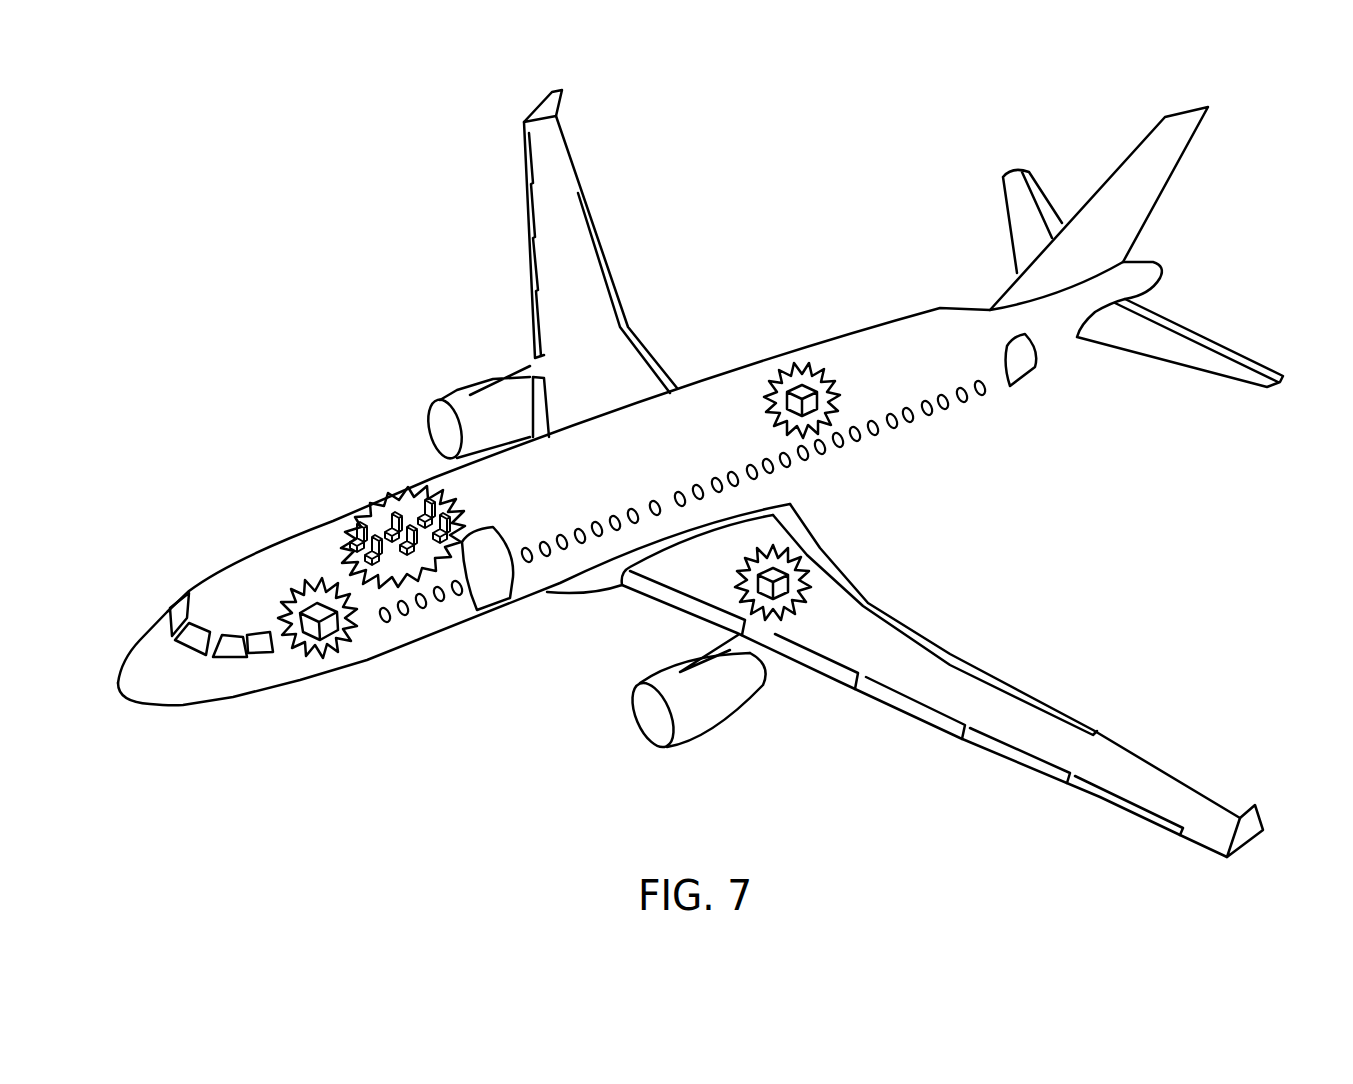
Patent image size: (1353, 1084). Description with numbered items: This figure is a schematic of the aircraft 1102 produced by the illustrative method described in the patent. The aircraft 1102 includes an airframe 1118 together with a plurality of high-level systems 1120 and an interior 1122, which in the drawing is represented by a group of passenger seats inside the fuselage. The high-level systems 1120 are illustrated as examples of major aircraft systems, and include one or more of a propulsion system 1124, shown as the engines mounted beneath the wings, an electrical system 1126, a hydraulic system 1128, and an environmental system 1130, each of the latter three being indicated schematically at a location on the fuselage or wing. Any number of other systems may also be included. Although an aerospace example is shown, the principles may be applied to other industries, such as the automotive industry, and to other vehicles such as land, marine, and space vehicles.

The aircraft 1102 is at (700, 473).
The airframe 1118 is at (360, 477).
The high-level systems 1120 is at (1050, 548).
The interior 1122 is at (355, 525).
The propulsion system 1124 is at (455, 396).
The electrical system 1126 is at (333, 608).
The hydraulic system 1128 is at (782, 570).
The environmental system 1130 is at (802, 383).